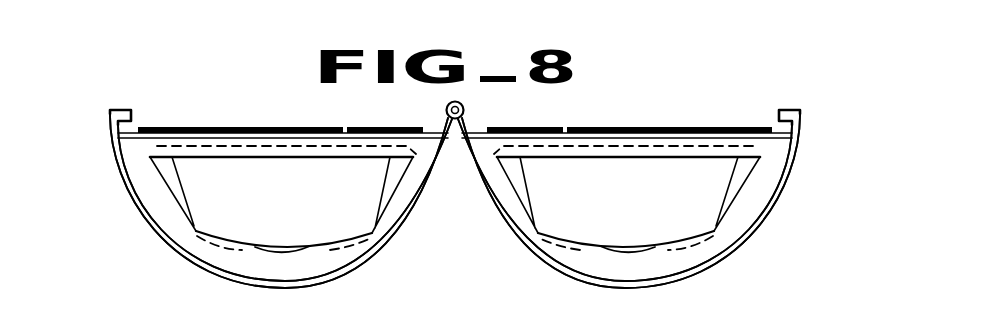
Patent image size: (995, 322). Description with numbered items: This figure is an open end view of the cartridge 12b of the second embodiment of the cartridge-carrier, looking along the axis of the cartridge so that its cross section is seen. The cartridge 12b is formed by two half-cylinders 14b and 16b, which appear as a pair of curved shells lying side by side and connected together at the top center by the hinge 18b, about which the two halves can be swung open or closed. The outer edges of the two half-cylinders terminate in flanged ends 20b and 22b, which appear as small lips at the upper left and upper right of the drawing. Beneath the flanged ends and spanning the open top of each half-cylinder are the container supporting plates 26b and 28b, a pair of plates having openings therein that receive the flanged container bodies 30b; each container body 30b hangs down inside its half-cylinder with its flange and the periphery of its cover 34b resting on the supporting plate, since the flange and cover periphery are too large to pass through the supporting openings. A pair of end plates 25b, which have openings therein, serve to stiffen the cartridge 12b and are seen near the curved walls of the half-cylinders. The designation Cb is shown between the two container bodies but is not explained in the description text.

The cartridge 12b is at (778, 232).
The half-cylinder 14b is at (130, 203).
The half-cylinder 16b is at (786, 190).
The hinge 18b is at (464, 106).
The flanged end 20b is at (118, 110).
The flanged end 22b is at (791, 110).
The container supporting plate 26b is at (132, 140).
The container supporting plate 28b is at (779, 146).
The cover 34b is at (181, 128).
The flanged container body 30b is at (311, 208).
The end plate 25b is at (182, 240).
The center of curvature Cb is at (539, 211).